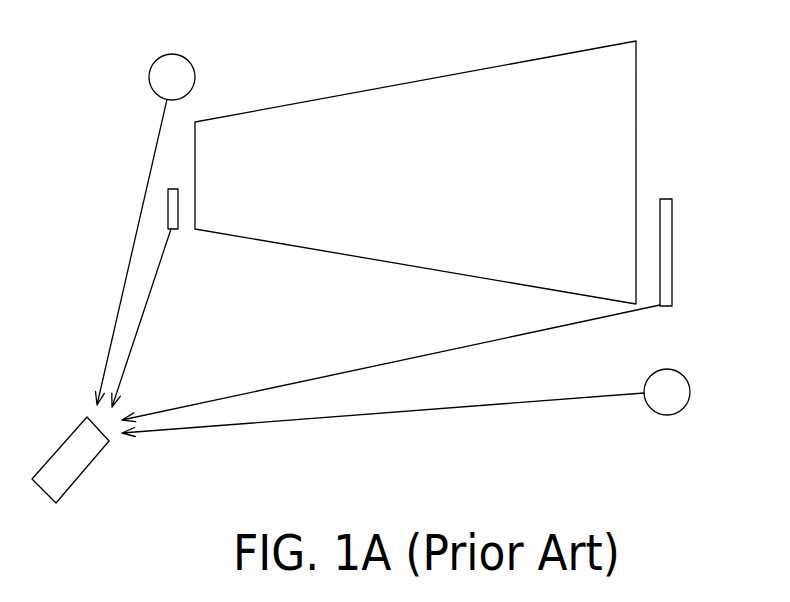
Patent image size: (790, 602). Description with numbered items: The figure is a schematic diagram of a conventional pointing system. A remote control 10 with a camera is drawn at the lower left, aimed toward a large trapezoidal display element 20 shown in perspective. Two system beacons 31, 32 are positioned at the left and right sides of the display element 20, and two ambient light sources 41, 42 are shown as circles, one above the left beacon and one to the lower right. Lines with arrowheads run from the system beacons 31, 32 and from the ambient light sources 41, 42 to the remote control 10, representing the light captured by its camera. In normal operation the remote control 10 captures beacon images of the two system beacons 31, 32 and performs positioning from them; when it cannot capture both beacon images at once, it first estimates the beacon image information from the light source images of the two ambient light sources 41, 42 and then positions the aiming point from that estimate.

The remote control 10 is at (55, 458).
The display screen 20 is at (636, 85).
The system beacon 31 is at (168, 210).
The system beacon 32 is at (672, 250).
The ambient light source 41 is at (188, 58).
The ambient light source 42 is at (690, 391).